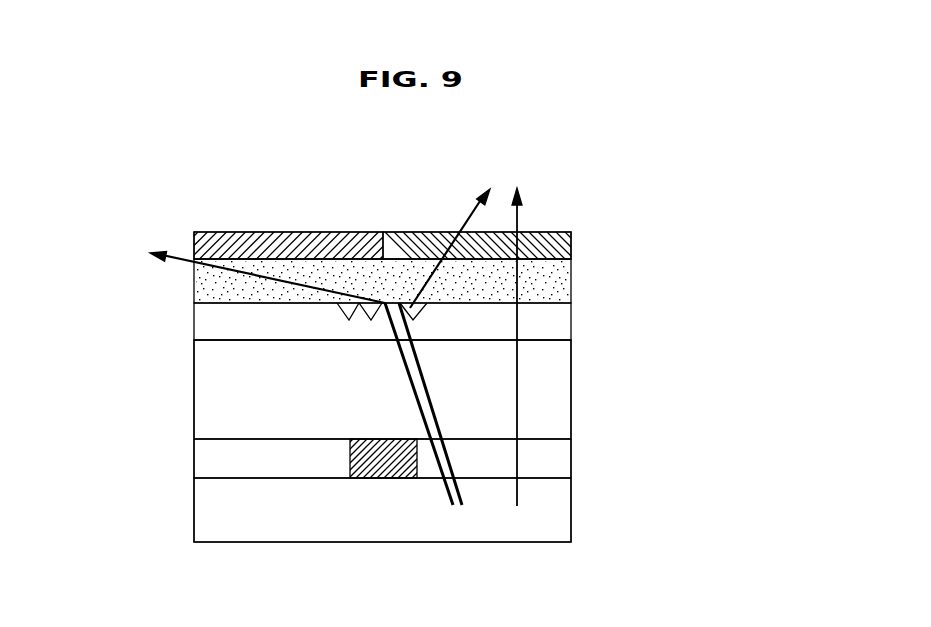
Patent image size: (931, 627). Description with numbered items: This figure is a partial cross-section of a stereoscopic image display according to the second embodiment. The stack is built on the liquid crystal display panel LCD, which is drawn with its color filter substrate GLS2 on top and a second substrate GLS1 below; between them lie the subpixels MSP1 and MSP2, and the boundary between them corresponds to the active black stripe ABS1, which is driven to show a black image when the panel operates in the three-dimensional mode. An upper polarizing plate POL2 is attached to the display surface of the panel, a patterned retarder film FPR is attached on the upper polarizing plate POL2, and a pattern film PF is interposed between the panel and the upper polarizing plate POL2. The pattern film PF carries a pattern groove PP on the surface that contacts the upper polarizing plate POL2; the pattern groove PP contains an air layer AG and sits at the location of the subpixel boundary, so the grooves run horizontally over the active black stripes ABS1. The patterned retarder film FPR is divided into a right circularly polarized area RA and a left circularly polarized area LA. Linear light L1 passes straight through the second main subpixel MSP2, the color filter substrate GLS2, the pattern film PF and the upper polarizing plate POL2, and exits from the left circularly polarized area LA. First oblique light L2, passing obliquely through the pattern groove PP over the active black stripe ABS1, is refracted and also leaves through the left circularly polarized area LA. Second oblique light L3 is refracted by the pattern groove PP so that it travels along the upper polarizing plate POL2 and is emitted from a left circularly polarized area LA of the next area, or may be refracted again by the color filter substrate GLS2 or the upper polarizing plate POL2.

The patterned retarder film FPR is at (561, 247).
The right circularly polarized area RA is at (275, 243).
The left circularly polarized area LA is at (400, 245).
The upper polarizing plate POL2 is at (203, 280).
The pattern film PF is at (205, 322).
The liquid crystal display panel LCD is at (660, 393).
The color filter substrate GLS2 is at (560, 398).
The subpixel MSP1 is at (205, 467).
The second main subpixel MSP2 is at (560, 474).
The first glass substrate GLS1 is at (560, 521).
The active black stripe ABS1 is at (390, 478).
The air layer AG is at (343, 313).
The pattern groove PP is at (420, 308).
The linear light L1 is at (532, 345).
The first oblique light L2 is at (450, 247).
The second oblique light L3 is at (252, 272).